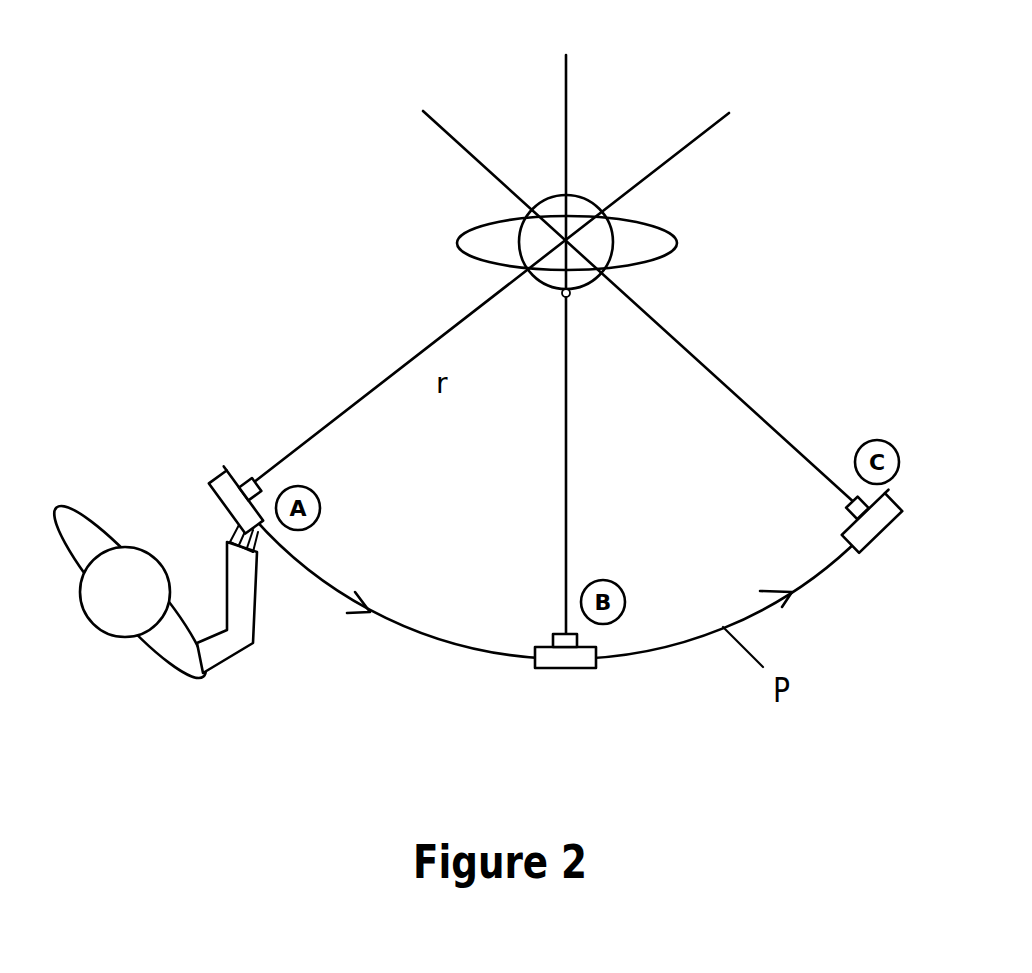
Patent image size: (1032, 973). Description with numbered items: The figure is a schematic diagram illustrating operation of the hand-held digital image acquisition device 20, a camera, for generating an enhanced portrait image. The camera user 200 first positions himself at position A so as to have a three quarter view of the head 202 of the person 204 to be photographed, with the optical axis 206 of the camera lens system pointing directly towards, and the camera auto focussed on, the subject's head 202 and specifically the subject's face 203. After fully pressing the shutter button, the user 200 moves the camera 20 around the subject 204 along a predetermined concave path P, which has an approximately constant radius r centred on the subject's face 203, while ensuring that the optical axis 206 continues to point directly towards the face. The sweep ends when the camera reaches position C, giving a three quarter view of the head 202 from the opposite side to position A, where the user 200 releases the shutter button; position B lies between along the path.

The hand-held digital image acquisition device 20 is at (207, 485).
The camera user 200 is at (148, 640).
The head 202 is at (583, 196).
The face 203 is at (585, 290).
The person 204 is at (663, 225).
The optical axis 206 is at (390, 378).